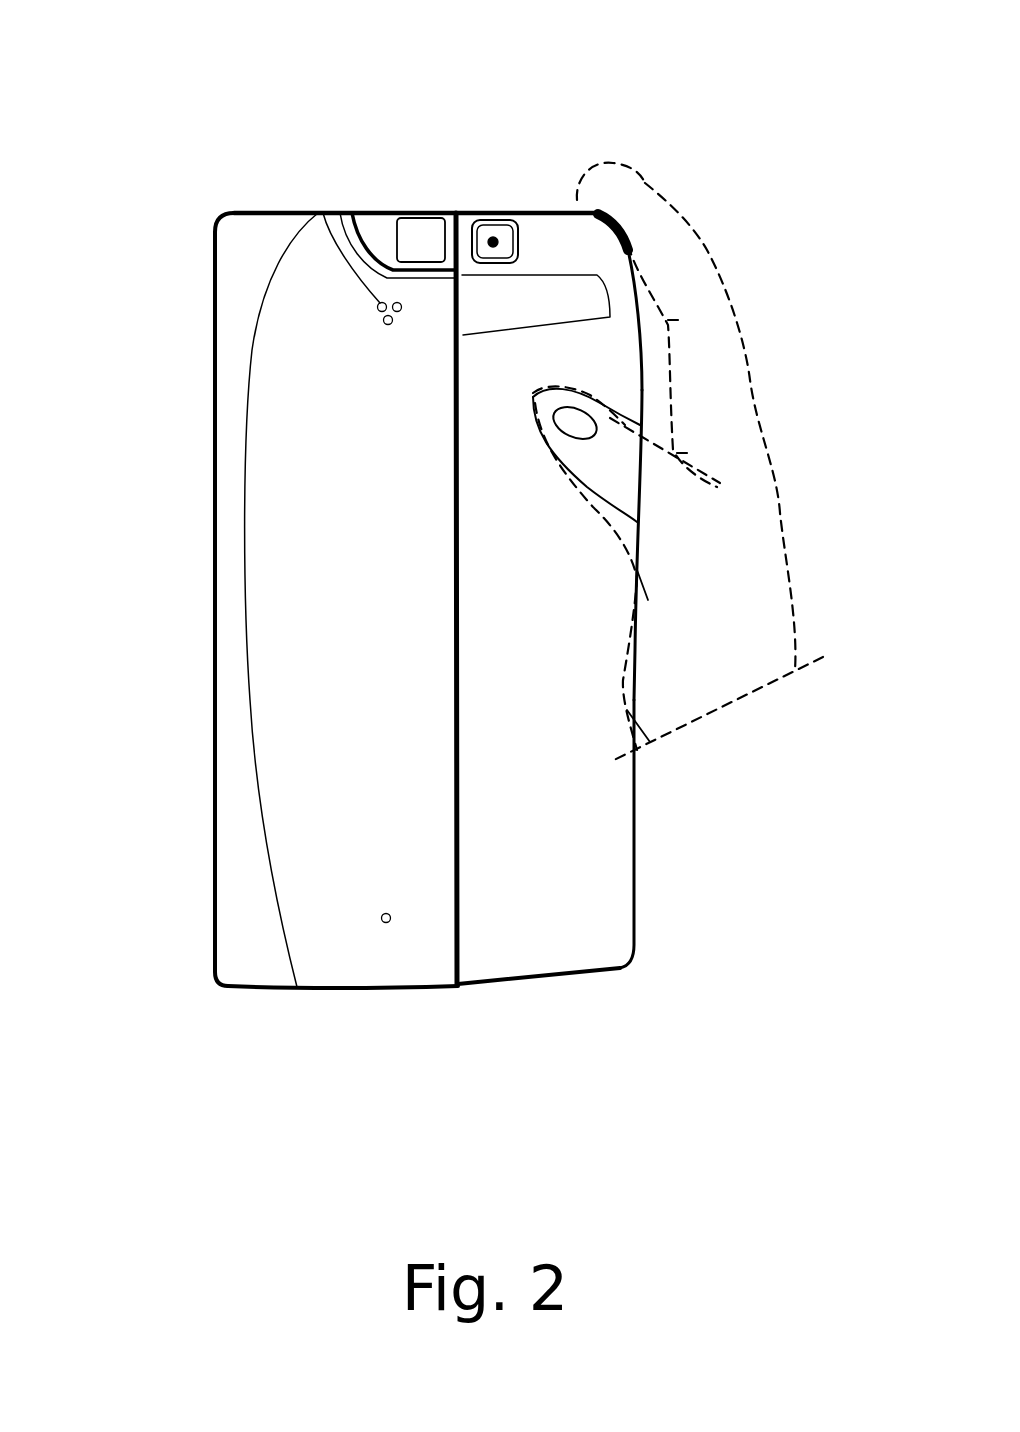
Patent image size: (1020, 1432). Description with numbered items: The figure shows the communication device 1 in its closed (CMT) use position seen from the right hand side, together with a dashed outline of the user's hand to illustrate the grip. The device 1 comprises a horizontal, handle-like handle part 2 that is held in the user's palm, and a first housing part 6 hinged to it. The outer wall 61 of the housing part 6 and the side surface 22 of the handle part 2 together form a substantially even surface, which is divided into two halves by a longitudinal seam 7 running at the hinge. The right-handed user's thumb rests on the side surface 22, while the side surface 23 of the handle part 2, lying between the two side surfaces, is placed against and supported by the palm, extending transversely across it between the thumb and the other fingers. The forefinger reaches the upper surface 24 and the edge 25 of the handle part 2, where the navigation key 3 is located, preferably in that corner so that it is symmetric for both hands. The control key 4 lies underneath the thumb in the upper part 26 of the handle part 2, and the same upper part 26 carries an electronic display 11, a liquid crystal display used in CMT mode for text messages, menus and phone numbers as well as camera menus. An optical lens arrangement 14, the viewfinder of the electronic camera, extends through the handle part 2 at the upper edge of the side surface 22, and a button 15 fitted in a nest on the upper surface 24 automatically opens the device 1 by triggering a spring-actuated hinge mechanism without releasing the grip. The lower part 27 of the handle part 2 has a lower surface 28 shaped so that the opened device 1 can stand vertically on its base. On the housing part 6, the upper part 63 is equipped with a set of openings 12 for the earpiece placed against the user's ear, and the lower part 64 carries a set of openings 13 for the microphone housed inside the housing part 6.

The communication device 1 is at (461, 20).
The handle part 2 is at (648, 843).
The navigation key 3 is at (613, 217).
The control key 4 is at (578, 427).
The first housing part 6 is at (280, 628).
The longitudinal seam 7 is at (452, 928).
The electronic display 11 is at (585, 302).
The set of openings for earpiece 12 is at (323, 213).
The set of openings for microphone 13 is at (381, 918).
The optical lens arrangement 14 is at (483, 235).
The button 15 is at (497, 210).
The side surface 22 is at (613, 895).
The side surface 23 is at (635, 802).
The upper surface 24 is at (537, 210).
The edge 25 is at (625, 233).
The upper part 26 is at (625, 350).
The lower part 27 is at (593, 803).
The lower surface 28 is at (565, 970).
The outer wall 61 is at (283, 753).
The upper part 63 is at (303, 378).
The lower part 64 is at (290, 893).